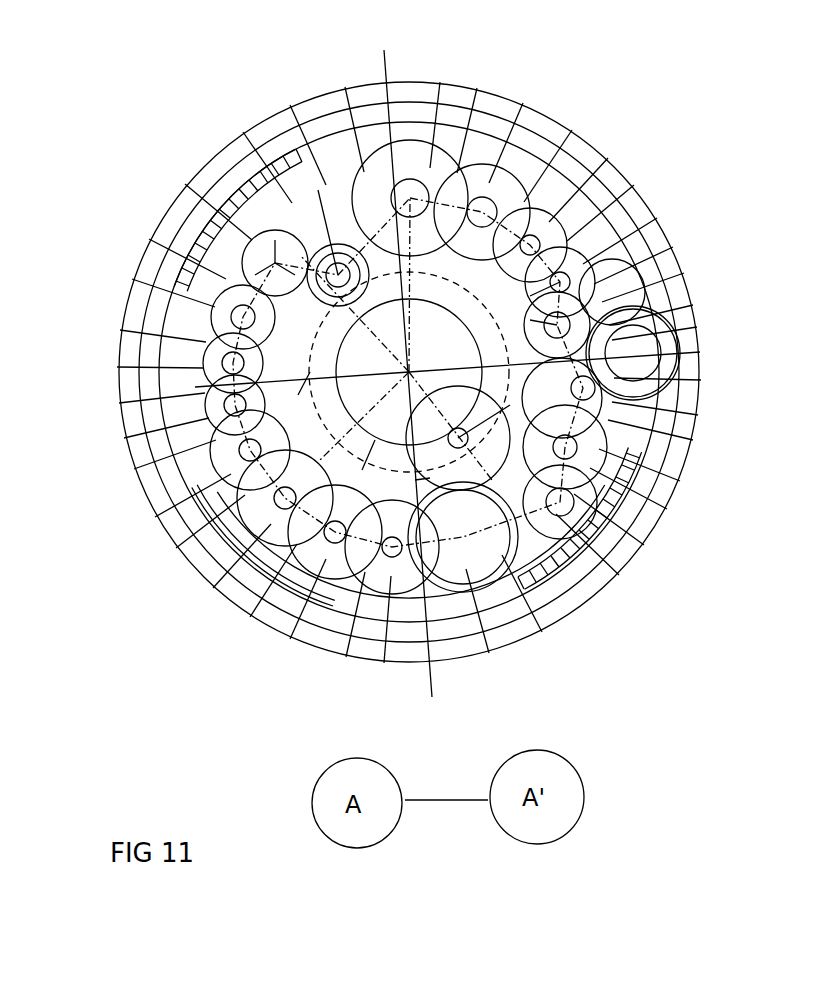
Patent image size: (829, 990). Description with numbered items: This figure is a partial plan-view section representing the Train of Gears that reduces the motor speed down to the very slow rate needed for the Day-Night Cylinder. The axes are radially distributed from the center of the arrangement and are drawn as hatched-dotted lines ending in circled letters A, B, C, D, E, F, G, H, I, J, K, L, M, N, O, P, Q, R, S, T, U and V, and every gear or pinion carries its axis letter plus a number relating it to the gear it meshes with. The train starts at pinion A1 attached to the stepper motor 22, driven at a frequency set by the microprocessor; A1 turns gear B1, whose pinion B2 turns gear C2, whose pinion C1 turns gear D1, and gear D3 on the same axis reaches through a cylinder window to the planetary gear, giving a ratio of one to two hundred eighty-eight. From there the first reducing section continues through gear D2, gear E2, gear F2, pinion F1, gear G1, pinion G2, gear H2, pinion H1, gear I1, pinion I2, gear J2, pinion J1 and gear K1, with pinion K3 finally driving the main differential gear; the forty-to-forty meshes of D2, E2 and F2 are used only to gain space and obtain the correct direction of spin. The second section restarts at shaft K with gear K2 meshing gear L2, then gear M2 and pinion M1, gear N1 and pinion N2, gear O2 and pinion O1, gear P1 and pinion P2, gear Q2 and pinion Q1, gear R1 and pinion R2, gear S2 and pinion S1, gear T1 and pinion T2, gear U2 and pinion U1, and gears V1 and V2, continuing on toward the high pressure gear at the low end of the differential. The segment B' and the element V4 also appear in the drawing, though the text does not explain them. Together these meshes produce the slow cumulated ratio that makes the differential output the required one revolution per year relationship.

The axis A is at (570, 512).
The axis B is at (635, 471).
The axis C is at (595, 390).
The axis D is at (680, 350).
The axis E is at (640, 278).
The axis F is at (590, 315).
The axis G is at (590, 265).
The axis H is at (538, 236).
The axis I is at (485, 200).
The axis J is at (410, 180).
The axis K is at (330, 265).
The axis L is at (268, 258).
The axis M is at (232, 315).
The axis N is at (222, 362).
The axis O is at (224, 407).
The axis P is at (240, 455).
The axis Q is at (278, 505).
The axis R is at (330, 545).
The axis S is at (391, 560).
The axis T is at (467, 550).
The axis U is at (466, 449).
The axis V is at (560, 590).
The gear V1 is at (356, 462).
The gear V2 is at (289, 390).
The ring portion V4 is at (345, 87).
The gear K1 is at (290, 105).
The gear K2 is at (243, 132).
The pinion K3 is at (314, 225).
The gear L2 is at (185, 184).
The pinion M1 is at (132, 279).
The gear M2 is at (149, 239).
The gear N1 is at (120, 330).
The pinion N2 is at (117, 367).
The pinion O1 is at (124, 438).
The gear O2 is at (119, 403).
The gear P1 is at (134, 469).
The pinion P2 is at (155, 517).
The pinion Q1 is at (213, 588).
The gear Q2 is at (176, 548).
The gear R1 is at (250, 617).
The pinion R2 is at (290, 639).
The pinion S1 is at (384, 663).
The gear S2 is at (346, 657).
The gear T1 is at (489, 653).
The pinion T2 is at (542, 632).
The stepper motor 22 is at (619, 575).
The pinion A1 is at (644, 545).
The gear B1 is at (667, 509).
The pinion B2 is at (680, 481).
The hatched segment B' is at (467, 508).
The pinion C1 is at (698, 415).
The gear C2 is at (693, 440).
The gear D1 is at (701, 380).
The gear D2 is at (697, 327).
The gear D3 is at (693, 305).
The gear E2 is at (684, 273).
The pinion F1 is at (525, 318).
The gear F2 is at (673, 247).
The gear G1 is at (657, 218).
The pinion G2 is at (525, 293).
The pinion H1 is at (608, 158).
The gear H2 is at (634, 185).
The gear I1 is at (572, 130).
The pinion I2 is at (523, 103).
The pinion J1 is at (440, 80).
The gear J2 is at (477, 88).
The pinion U1 is at (497, 418).
The gear U2 is at (404, 489).